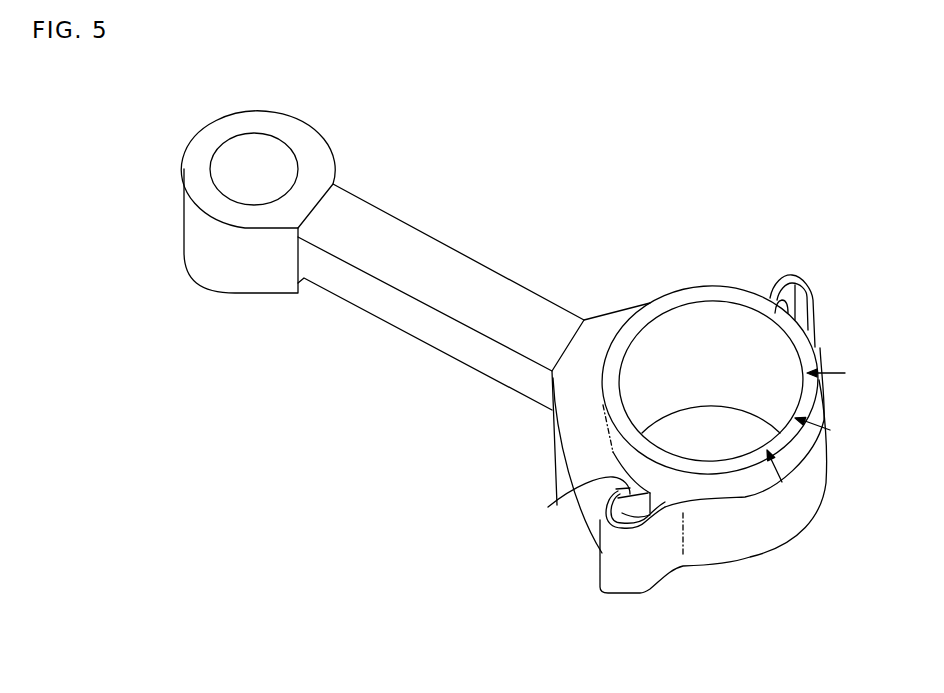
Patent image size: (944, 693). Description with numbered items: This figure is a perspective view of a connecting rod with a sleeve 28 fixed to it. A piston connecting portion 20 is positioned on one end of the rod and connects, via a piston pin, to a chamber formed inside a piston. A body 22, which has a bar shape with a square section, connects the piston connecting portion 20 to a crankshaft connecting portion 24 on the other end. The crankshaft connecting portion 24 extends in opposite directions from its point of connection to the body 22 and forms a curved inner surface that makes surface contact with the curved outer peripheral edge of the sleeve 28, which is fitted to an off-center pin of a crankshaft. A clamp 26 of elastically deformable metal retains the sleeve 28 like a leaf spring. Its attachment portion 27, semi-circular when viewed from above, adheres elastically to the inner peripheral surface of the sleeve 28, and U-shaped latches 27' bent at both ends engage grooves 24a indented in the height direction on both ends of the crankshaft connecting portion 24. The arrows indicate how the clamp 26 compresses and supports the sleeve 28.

The piston connecting portion 20 is at (228, 272).
The body 22 is at (435, 333).
The crankshaft connecting portion 24 is at (582, 505).
The grooves 24a is at (610, 487).
The clamp 26 is at (797, 521).
The attachment portion 27 is at (775, 427).
The latches 27' is at (727, 439).
The sleeve 28 is at (710, 300).